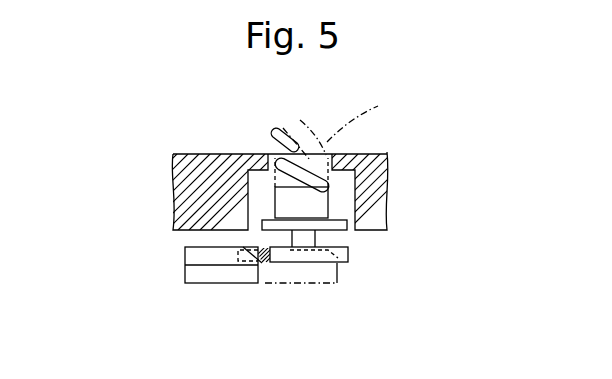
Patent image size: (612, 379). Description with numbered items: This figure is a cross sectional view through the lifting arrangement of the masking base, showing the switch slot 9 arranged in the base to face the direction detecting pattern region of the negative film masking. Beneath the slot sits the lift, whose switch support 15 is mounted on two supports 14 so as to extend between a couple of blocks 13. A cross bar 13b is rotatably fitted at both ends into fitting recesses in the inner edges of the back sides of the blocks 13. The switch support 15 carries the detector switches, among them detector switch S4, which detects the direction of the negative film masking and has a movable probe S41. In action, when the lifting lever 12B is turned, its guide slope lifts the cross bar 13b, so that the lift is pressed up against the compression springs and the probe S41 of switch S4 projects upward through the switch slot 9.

The switch slot 9 is at (265, 155).
The movable probe S41 is at (300, 157).
The detector switch S4 is at (357, 157).
The switch support 15 is at (347, 228).
The support 14 is at (316, 238).
The block 13 is at (348, 262).
The cross bar 13b is at (257, 258).
The lifting lever 12B is at (285, 285).